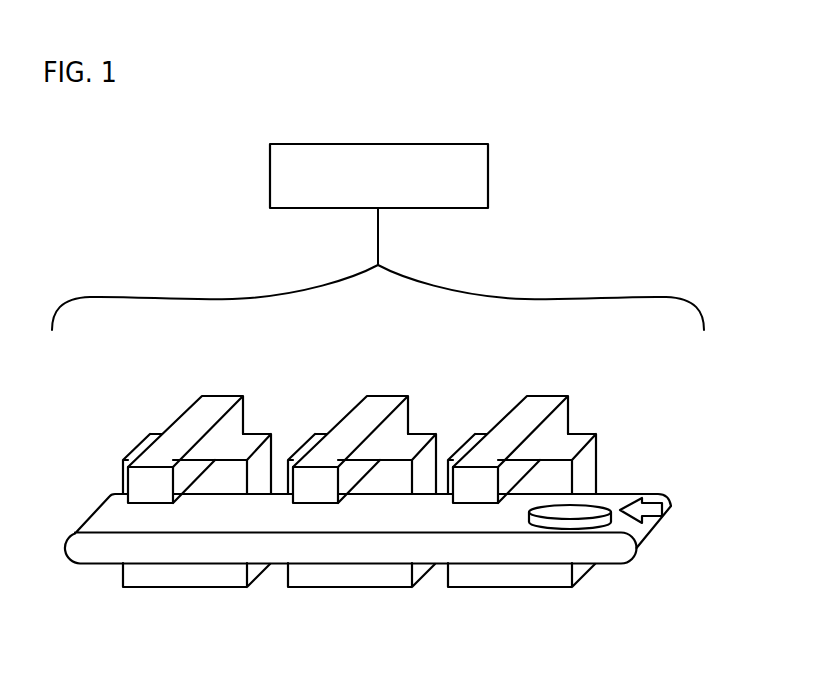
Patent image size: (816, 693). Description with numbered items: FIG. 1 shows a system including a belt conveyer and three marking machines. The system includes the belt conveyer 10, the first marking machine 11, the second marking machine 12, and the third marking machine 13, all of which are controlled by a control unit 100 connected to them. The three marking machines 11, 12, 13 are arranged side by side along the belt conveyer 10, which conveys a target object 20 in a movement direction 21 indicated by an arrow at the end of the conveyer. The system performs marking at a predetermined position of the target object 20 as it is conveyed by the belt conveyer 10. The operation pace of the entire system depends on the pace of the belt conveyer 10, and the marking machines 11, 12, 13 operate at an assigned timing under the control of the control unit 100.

The control unit 100 is at (380, 144).
The belt conveyer 10 is at (92, 513).
The first marking machine 11 is at (532, 402).
The second marking machine 12 is at (380, 403).
The third marking machine 13 is at (212, 403).
The target object 20 is at (595, 505).
The movement direction 21 is at (646, 496).